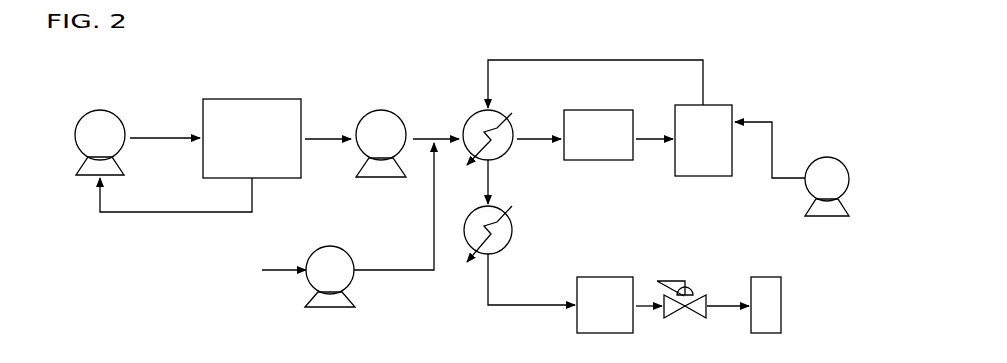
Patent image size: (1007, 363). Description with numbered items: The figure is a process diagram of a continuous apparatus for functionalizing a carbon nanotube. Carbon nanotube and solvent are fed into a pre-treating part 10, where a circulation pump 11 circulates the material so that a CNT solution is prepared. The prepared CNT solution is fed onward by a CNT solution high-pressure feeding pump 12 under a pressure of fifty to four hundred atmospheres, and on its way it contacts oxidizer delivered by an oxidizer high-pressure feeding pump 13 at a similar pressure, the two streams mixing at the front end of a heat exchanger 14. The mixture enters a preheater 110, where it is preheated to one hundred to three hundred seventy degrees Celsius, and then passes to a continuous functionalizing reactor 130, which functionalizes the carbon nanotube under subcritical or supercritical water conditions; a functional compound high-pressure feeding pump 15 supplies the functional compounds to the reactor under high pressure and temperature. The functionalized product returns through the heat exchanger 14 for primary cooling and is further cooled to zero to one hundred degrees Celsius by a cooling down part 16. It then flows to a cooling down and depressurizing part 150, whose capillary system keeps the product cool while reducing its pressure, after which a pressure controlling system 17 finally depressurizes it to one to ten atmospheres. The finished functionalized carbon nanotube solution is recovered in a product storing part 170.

The pre-treating part 10 is at (253, 99).
The circulation pump 11 is at (111, 108).
The CNT solution high-pressure feeding pump 12 is at (393, 110).
The oxidizer high-pressure feeding pump 13 is at (332, 246).
The heat exchanger 14 is at (500, 110).
The functional compound high-pressure feeding pump 15 is at (828, 157).
The cooling down part 16 is at (493, 205).
The pressure controlling system 17 is at (698, 288).
The preheater 110 is at (595, 110).
The functionalizing reactor 130 is at (713, 105).
The cooling down and depressurizing part 150 is at (602, 277).
The product storing part 170 is at (765, 277).